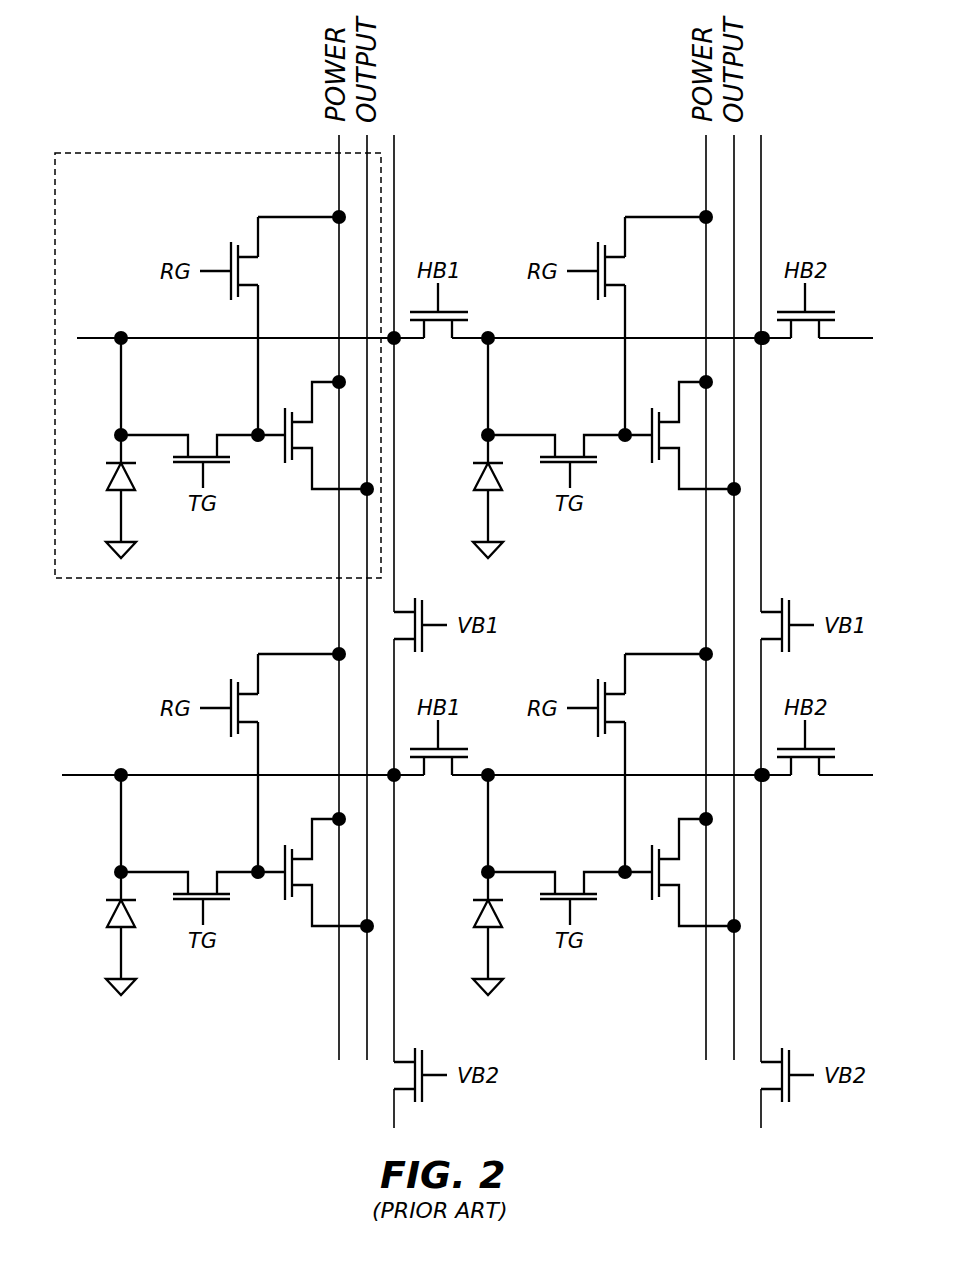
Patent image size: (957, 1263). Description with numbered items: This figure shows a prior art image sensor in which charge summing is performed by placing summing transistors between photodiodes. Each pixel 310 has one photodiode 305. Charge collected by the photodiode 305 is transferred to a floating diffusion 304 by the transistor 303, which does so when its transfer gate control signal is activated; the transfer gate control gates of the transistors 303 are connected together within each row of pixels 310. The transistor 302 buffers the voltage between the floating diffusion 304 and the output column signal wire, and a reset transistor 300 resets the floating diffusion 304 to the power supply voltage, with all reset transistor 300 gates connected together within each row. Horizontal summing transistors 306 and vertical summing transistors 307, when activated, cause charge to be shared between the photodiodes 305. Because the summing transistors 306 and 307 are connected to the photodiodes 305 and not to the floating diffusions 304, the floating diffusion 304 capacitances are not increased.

The reset transistor 300 is at (258, 267).
The transistor 302 is at (284, 459).
The transistor 303 is at (214, 467).
The floating diffusion 304 is at (256, 432).
The photodiode 305 is at (121, 495).
The horizontal summing transistor 306 is at (436, 343).
The vertical summing transistor 307 is at (424, 640).
The pixel 310 is at (118, 153).